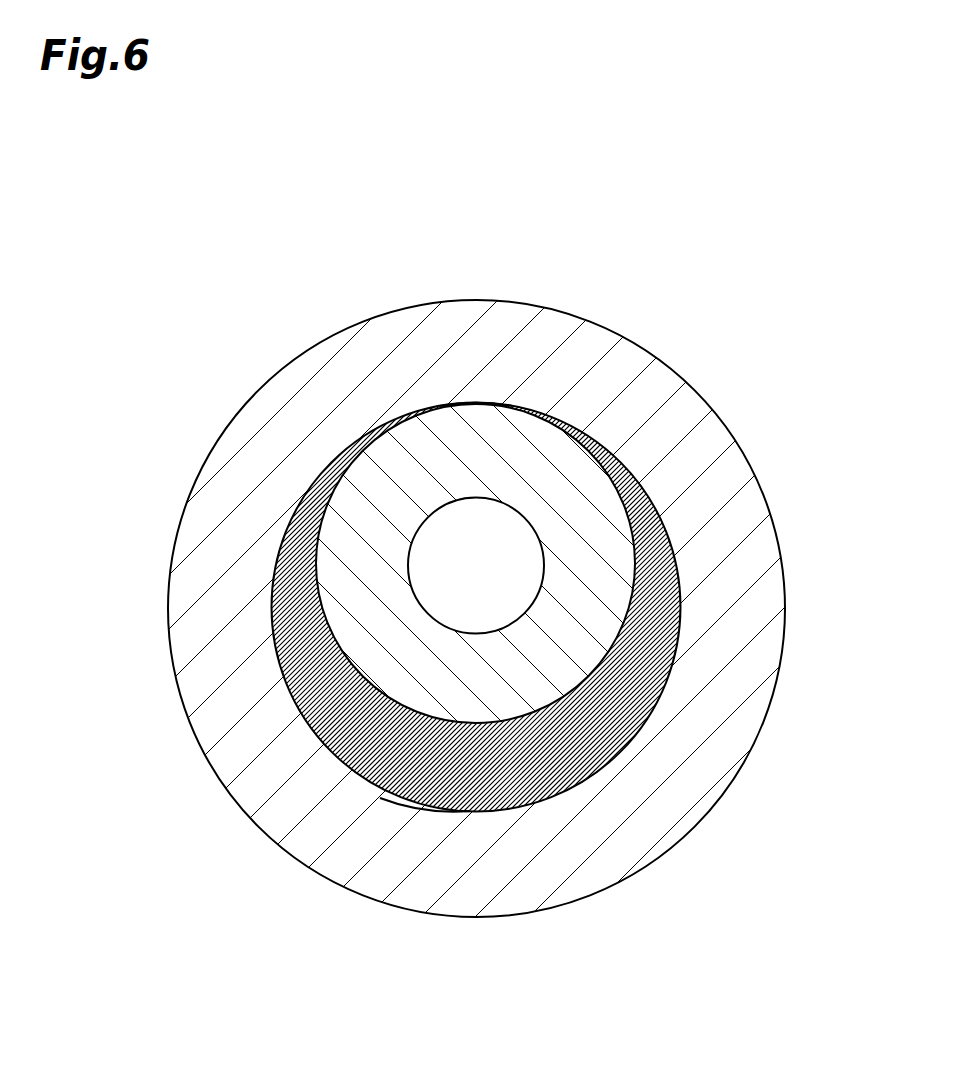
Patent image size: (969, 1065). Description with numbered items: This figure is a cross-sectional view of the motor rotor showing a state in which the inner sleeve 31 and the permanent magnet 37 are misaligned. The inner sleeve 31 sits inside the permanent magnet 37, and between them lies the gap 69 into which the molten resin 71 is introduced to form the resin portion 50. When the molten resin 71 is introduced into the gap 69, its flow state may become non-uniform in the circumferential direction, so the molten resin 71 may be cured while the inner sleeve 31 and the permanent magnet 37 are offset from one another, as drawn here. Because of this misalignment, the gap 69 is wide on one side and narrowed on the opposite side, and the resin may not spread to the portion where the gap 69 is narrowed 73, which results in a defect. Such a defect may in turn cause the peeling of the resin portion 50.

The permanent magnet 37 is at (767, 650).
The inner sleeve 31 is at (583, 660).
The resin portion 50 is at (484, 642).
The molten resin 71 is at (560, 760).
The portion where the gap is narrowed 73 is at (492, 403).
The gap 69 is at (445, 771).